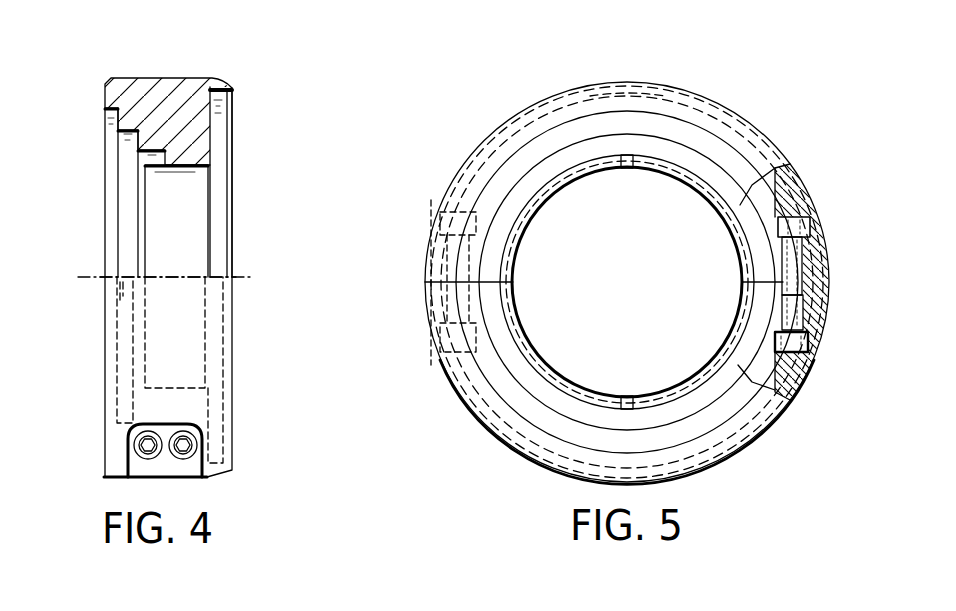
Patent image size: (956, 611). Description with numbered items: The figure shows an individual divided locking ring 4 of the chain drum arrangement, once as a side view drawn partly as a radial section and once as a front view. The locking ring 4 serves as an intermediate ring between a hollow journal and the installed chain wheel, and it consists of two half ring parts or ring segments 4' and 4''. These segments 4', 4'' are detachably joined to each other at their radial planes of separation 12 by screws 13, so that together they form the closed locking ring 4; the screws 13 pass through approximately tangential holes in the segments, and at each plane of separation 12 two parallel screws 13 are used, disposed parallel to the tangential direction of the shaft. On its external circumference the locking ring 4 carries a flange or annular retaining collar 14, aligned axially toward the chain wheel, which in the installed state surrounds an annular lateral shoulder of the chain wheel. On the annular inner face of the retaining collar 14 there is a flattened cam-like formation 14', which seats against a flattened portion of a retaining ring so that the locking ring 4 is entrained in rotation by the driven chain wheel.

In FIG. 4, the divided locking ring 4 is at (138, 277).
In FIG. 5, the divided locking ring 4 is at (627, 257).
In FIG. 4, the locking ring segment 4' is at (167, 146).
In FIG. 5, the locking ring segment 4' is at (627, 262).
In FIG. 4, the locking ring segment 4'' is at (211, 370).
In FIG. 5, the locking ring segment 4'' is at (627, 457).
In FIG. 4, the radial plane of separation 12 is at (238, 275).
In FIG. 5, the radial plane of separation 12 is at (487, 282).
In FIG. 4, the screws 13 is at (185, 447).
In FIG. 5, the screws 13 is at (795, 263).
In FIG. 4, the annular retaining collar 14 is at (246, 156).
In FIG. 4, the cam-like formation 14' is at (254, 184).